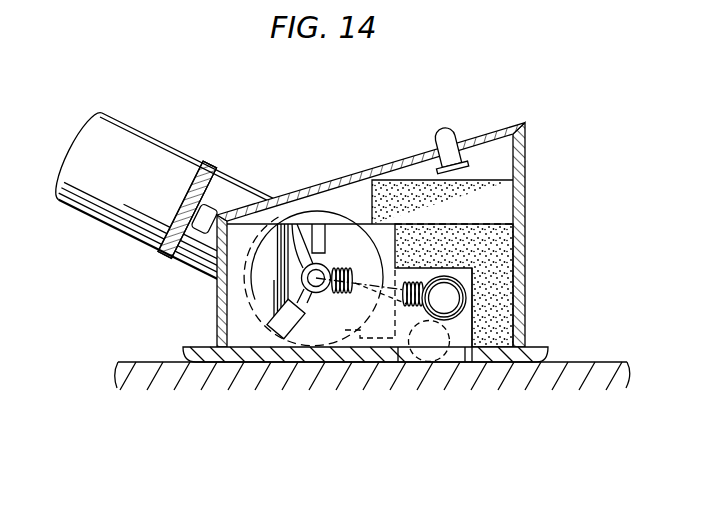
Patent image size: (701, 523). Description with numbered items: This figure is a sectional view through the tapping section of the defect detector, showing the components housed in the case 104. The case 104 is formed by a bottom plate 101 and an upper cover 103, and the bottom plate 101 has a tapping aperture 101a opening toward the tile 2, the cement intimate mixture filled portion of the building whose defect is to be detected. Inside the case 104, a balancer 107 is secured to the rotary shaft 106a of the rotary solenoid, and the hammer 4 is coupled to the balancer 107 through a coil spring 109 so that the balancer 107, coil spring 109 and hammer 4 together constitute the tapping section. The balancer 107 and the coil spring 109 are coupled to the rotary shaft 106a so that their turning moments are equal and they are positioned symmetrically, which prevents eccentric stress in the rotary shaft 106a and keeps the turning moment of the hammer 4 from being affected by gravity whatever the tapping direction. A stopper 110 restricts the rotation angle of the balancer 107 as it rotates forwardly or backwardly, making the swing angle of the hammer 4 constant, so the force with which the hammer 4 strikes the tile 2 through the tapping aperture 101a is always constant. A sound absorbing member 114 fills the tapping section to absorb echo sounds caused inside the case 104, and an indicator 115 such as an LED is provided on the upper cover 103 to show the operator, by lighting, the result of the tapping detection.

The tile 2 is at (606, 362).
The hammer 4 is at (452, 318).
The bottom plate 101 is at (200, 362).
The tapping aperture 101a is at (408, 358).
The upper cover 103 is at (342, 176).
The case 104 is at (527, 118).
The rotary shaft 106a is at (289, 224).
The balancer 107 is at (263, 312).
The coil spring 109 is at (378, 292).
The stopper 110 is at (297, 337).
The sound absorbing member 114 is at (497, 210).
The indicator 115 is at (441, 130).